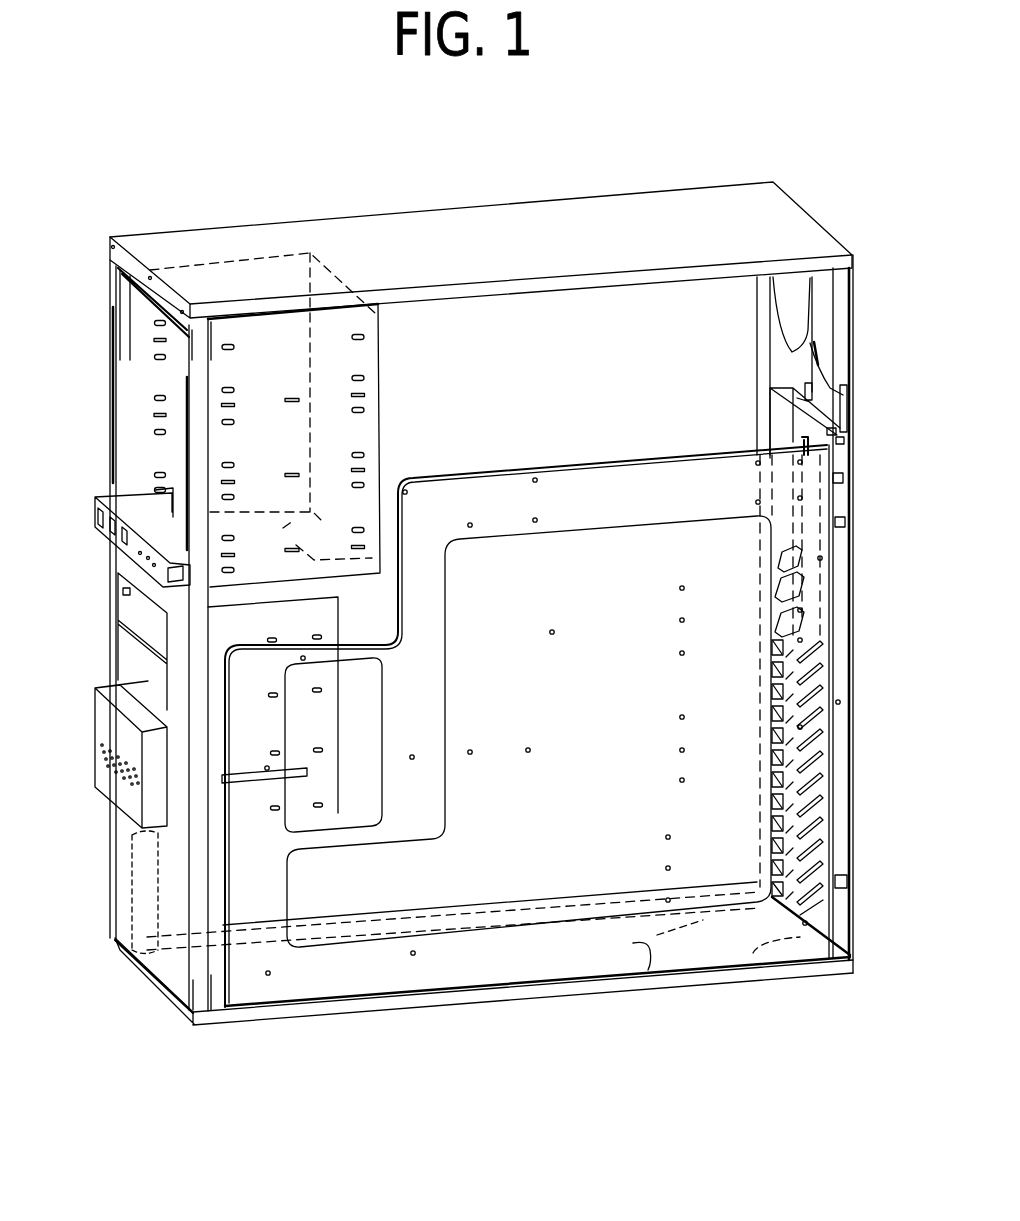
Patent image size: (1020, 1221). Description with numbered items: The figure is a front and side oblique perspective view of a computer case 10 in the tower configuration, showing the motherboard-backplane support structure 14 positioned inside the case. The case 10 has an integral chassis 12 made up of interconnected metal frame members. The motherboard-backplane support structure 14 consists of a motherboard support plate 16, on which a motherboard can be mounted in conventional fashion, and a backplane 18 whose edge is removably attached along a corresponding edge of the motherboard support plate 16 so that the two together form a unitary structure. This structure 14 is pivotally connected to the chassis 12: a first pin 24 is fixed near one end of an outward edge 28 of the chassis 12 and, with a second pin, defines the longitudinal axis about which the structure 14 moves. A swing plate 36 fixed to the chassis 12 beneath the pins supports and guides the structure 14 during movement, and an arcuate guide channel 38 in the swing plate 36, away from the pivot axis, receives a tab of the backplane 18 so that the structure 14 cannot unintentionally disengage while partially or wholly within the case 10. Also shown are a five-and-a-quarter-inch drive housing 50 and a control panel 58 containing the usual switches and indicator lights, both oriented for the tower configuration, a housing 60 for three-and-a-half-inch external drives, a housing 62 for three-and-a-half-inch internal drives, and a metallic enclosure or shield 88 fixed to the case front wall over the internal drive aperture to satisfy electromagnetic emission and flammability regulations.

The computer case 10 is at (553, 198).
The integral chassis 12 is at (583, 290).
The motherboard support plate 16 is at (569, 820).
The 5¼" drive housing 50 is at (370, 433).
The control panel 58 is at (105, 497).
The metallic enclosure or shield 88 is at (93, 697).
The housing for 3½" external drives 60 is at (328, 678).
The housing for 3½" internal drives 62 is at (335, 797).
The motherboard-backplane support structure 14 is at (752, 384).
The backplane 18 is at (778, 418).
The first pin 24 is at (840, 436).
The outward edge of chassis 28 is at (848, 603).
The swing plate 36 is at (734, 956).
The arcuate guide channel 38 is at (626, 949).